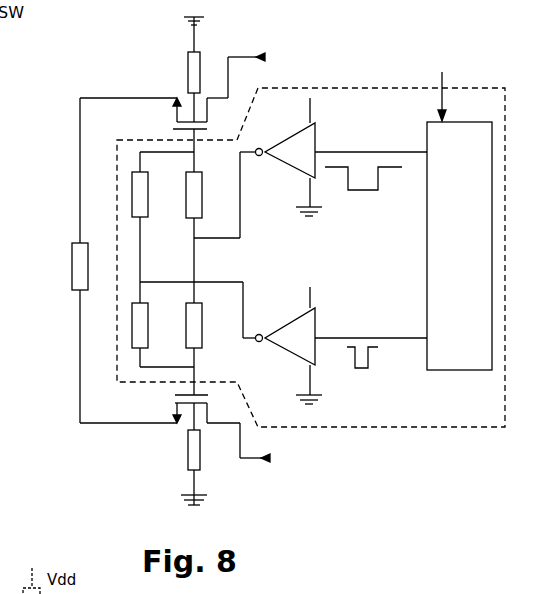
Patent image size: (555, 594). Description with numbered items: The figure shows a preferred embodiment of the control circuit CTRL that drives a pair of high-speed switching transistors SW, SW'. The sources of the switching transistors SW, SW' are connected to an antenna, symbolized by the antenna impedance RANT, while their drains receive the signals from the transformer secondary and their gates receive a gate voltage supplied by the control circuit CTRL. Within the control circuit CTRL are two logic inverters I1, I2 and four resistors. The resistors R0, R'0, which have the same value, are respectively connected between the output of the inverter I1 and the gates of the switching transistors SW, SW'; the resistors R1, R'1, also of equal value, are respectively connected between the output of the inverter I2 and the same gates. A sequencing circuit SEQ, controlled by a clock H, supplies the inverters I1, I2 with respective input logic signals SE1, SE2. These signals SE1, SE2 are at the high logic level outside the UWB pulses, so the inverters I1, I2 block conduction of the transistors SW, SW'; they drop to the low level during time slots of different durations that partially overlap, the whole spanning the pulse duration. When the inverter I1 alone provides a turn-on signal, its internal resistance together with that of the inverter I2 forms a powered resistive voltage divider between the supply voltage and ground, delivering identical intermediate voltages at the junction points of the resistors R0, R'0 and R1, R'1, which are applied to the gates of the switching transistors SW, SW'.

The switching transistor SW is at (197, 91).
The switching transistor SW' is at (193, 428).
The antenna impedance RANT is at (58, 260).
The resistor R1 is at (151, 217).
The resistor R0 is at (205, 227).
The resistor R'1 is at (154, 324).
The resistor R'0 is at (208, 315).
The control circuit CTRL is at (288, 88).
The logic inverter I1 is at (302, 157).
The logic inverter I2 is at (302, 345).
The input logic signal SE1 is at (371, 158).
The input logic signal SE2 is at (371, 338).
The sequencing circuit SEQ is at (459, 246).
The clock H is at (442, 86).